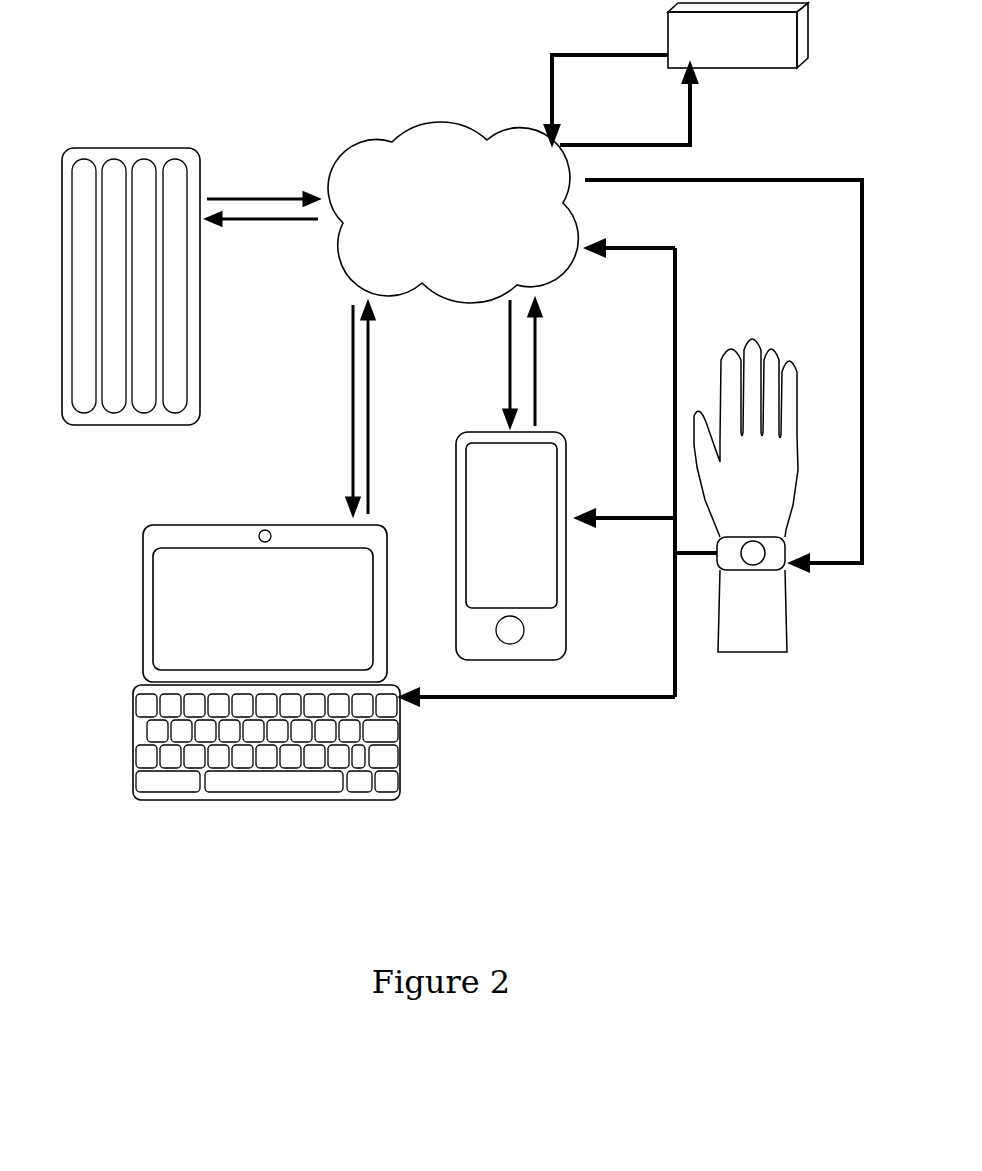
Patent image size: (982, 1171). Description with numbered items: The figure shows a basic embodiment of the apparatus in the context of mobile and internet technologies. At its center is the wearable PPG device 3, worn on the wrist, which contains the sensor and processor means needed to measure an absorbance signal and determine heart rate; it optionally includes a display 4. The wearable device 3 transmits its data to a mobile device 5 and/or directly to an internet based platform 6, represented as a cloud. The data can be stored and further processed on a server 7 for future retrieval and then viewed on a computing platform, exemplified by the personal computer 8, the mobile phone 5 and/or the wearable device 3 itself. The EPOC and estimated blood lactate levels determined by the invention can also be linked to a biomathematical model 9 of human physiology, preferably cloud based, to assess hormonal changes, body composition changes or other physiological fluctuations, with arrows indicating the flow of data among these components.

The wearable PPG device 3 is at (785, 540).
The display 4 is at (765, 562).
The mobile device 5 is at (566, 545).
The internet based platform 6 is at (405, 125).
The server 7 is at (200, 302).
The personal computer 8 is at (143, 604).
The biomathematical model 9 is at (668, 32).